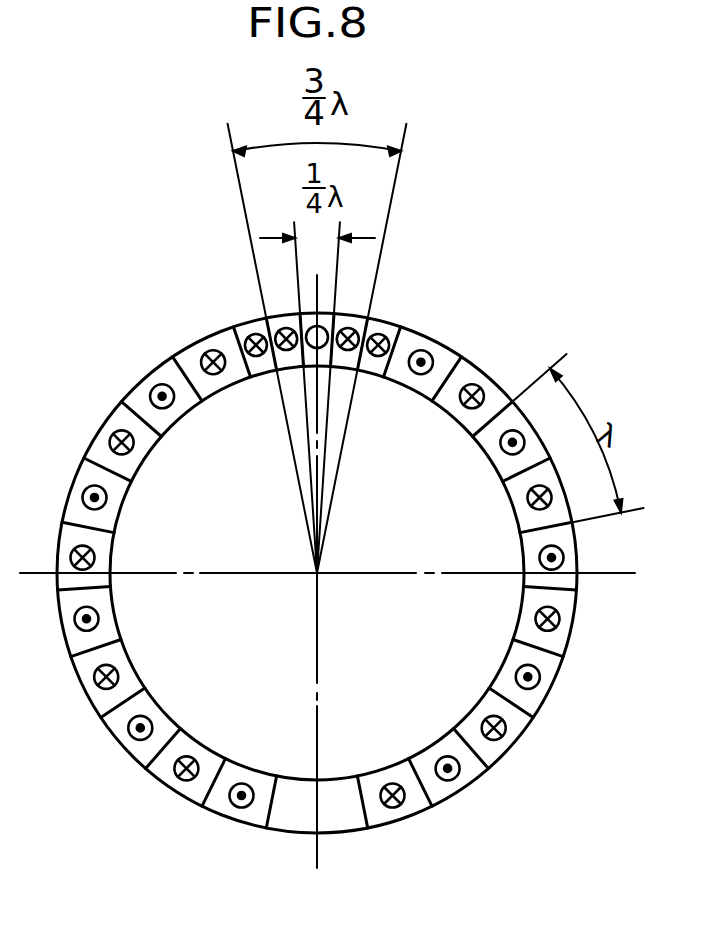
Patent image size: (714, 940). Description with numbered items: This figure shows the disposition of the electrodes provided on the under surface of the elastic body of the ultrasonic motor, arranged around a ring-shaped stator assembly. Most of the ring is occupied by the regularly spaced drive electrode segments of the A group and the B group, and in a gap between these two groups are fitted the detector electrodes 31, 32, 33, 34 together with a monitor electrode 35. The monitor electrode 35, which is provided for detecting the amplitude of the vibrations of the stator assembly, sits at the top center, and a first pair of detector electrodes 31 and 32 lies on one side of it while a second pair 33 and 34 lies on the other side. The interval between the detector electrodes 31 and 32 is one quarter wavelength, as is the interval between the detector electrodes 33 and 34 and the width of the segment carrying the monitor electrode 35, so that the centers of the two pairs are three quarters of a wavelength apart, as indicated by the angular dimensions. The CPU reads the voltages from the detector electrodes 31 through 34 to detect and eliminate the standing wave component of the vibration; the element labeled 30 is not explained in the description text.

The armature winding conductor 30 is at (536, 686).
The detector electrode 31 is at (253, 334).
The detector electrode 32 is at (286, 328).
The detector electrode 33 is at (352, 328).
The detector electrode 34 is at (388, 336).
The monitor electrode 35 is at (326, 326).